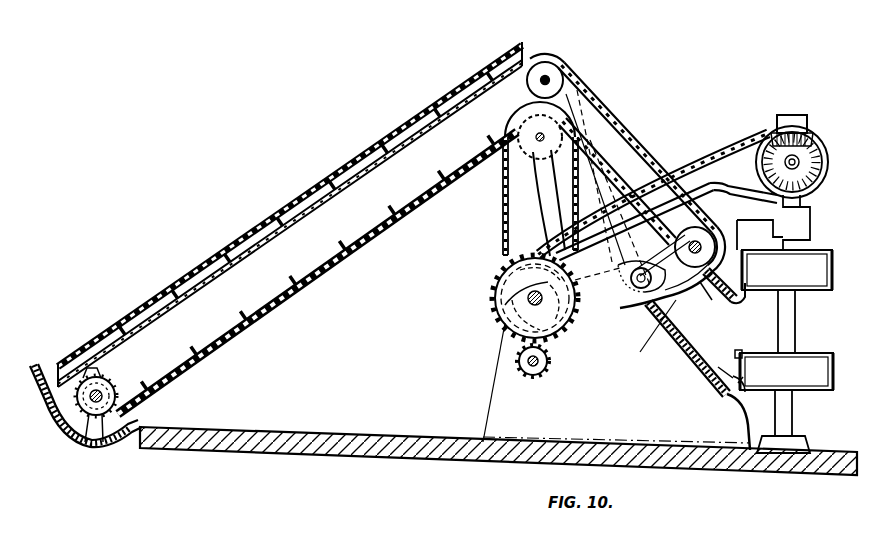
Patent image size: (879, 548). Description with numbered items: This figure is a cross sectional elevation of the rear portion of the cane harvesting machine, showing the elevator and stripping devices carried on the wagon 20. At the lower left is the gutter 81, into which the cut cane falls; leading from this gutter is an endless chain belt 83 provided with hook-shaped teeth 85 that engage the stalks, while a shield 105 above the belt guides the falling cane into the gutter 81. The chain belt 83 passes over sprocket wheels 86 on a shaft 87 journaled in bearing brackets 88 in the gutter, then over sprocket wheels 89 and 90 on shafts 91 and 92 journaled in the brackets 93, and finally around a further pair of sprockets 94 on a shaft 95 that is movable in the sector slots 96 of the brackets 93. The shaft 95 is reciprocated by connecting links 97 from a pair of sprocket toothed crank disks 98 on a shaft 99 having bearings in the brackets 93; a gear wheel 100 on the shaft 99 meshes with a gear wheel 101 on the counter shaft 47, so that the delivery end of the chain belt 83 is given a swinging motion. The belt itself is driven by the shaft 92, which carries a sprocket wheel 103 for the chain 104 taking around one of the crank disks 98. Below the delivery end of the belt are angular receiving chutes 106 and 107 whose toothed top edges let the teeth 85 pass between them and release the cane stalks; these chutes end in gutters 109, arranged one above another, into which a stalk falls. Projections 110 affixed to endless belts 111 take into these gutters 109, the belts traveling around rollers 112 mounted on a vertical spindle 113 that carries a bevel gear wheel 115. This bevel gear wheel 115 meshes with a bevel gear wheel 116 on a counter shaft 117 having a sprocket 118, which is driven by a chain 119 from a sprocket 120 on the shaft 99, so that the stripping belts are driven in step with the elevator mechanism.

The wagon 20 is at (392, 438).
The counter shaft 47 is at (528, 377).
The gutter 81 is at (68, 440).
The endless chain belt 83 is at (246, 343).
The teeth 85 is at (344, 251).
The sprocket wheels 86 is at (115, 385).
The shaft 87 is at (96, 390).
The bearing brackets 88 is at (100, 432).
The sprocket wheel 89 is at (568, 67).
The sprocket wheel 90 is at (530, 147).
The shaft 91 is at (553, 80).
The shaft 92 is at (545, 170).
The brackets 93 is at (628, 225).
The sprockets 94 is at (690, 285).
The shaft 95 is at (727, 242).
The sector slots 96 is at (660, 327).
The connecting links 97 is at (602, 280).
The sprocket toothed crank disks 98 is at (508, 260).
The shaft 99 is at (530, 303).
The gear wheel 100 is at (493, 292).
The gear wheel 101 is at (547, 373).
The sprocket wheel 103 is at (508, 176).
The chain 104 is at (502, 224).
The shield 105 is at (306, 194).
The receiving chute 106 is at (705, 290).
The receiving chute 107 is at (683, 352).
The gutters 109 is at (728, 298).
The projections 110 is at (725, 372).
The endless belts 111 is at (833, 270).
The rollers 112 is at (784, 320).
The vertical spindle 113 is at (798, 315).
The bevel gear wheel 115 is at (815, 135).
The bevel gear wheel 116 is at (820, 172).
The counter shaft 117 is at (800, 162).
The sprocket 118 is at (820, 195).
The chain 119 is at (657, 195).
The sprocket 120 is at (553, 255).